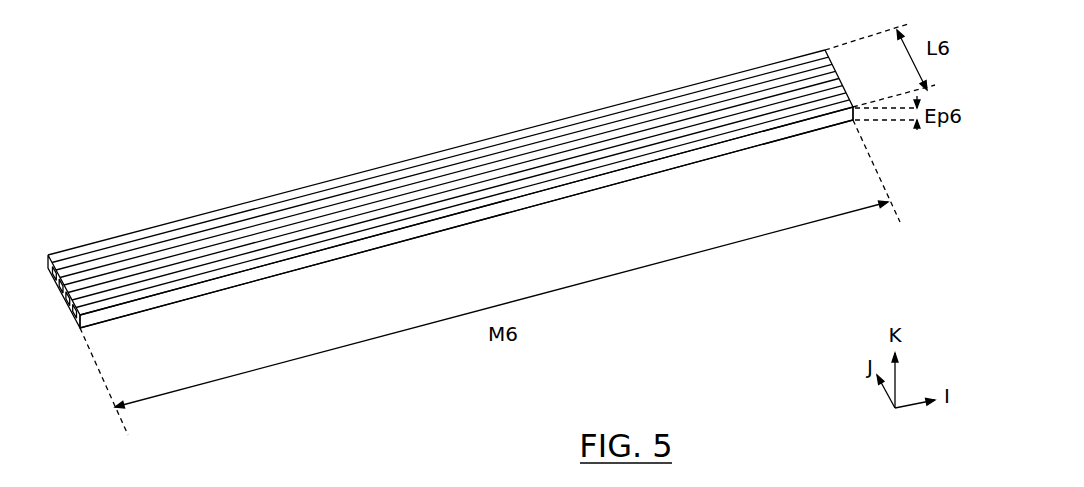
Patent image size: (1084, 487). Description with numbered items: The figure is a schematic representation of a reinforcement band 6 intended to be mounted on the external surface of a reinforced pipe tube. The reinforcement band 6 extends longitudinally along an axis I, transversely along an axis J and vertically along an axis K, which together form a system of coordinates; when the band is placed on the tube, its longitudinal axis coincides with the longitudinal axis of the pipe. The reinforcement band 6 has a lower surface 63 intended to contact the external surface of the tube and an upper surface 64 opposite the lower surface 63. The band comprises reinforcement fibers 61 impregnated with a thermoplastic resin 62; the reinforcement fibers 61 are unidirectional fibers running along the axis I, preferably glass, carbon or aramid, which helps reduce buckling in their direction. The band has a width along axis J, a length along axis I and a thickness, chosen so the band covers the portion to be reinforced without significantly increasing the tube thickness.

The reinforcement band 6 is at (110, 197).
The reinforcement fibers 61 is at (522, 175).
The thermoplastic resin 62 is at (645, 173).
The lower surface 63 is at (318, 262).
The upper surface 64 is at (303, 188).